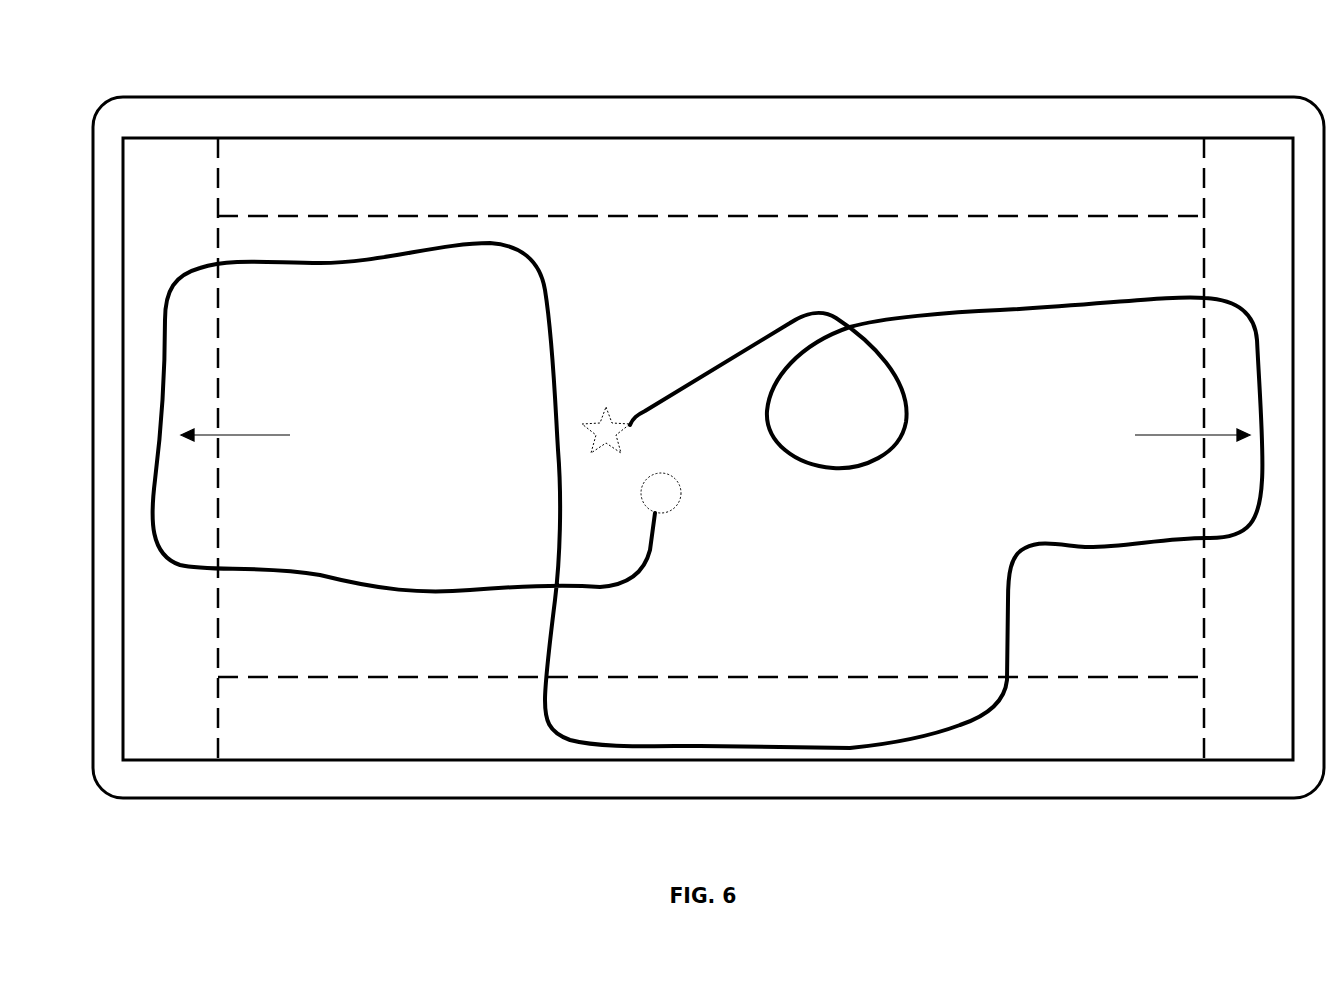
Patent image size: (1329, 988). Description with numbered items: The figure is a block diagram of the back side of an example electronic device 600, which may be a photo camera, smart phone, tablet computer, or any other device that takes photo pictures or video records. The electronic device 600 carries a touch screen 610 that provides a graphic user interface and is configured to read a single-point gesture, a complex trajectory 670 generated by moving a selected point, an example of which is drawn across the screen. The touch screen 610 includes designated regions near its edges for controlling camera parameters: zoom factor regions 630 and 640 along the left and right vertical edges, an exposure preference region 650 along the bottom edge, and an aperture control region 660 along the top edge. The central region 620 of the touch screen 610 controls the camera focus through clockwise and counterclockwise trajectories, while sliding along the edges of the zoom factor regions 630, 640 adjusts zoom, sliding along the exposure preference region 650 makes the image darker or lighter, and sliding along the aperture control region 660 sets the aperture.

The electronic device 600 is at (1313, 74).
The touch screen 610 is at (300, 142).
The central region 620 is at (711, 446).
The zoom factor region 630 is at (301, 449).
The zoom factor region 640 is at (1124, 449).
The exposure preference region 650 is at (711, 711).
The aperture control region 660 is at (711, 182).
The complex trajectory 670 is at (1016, 310).